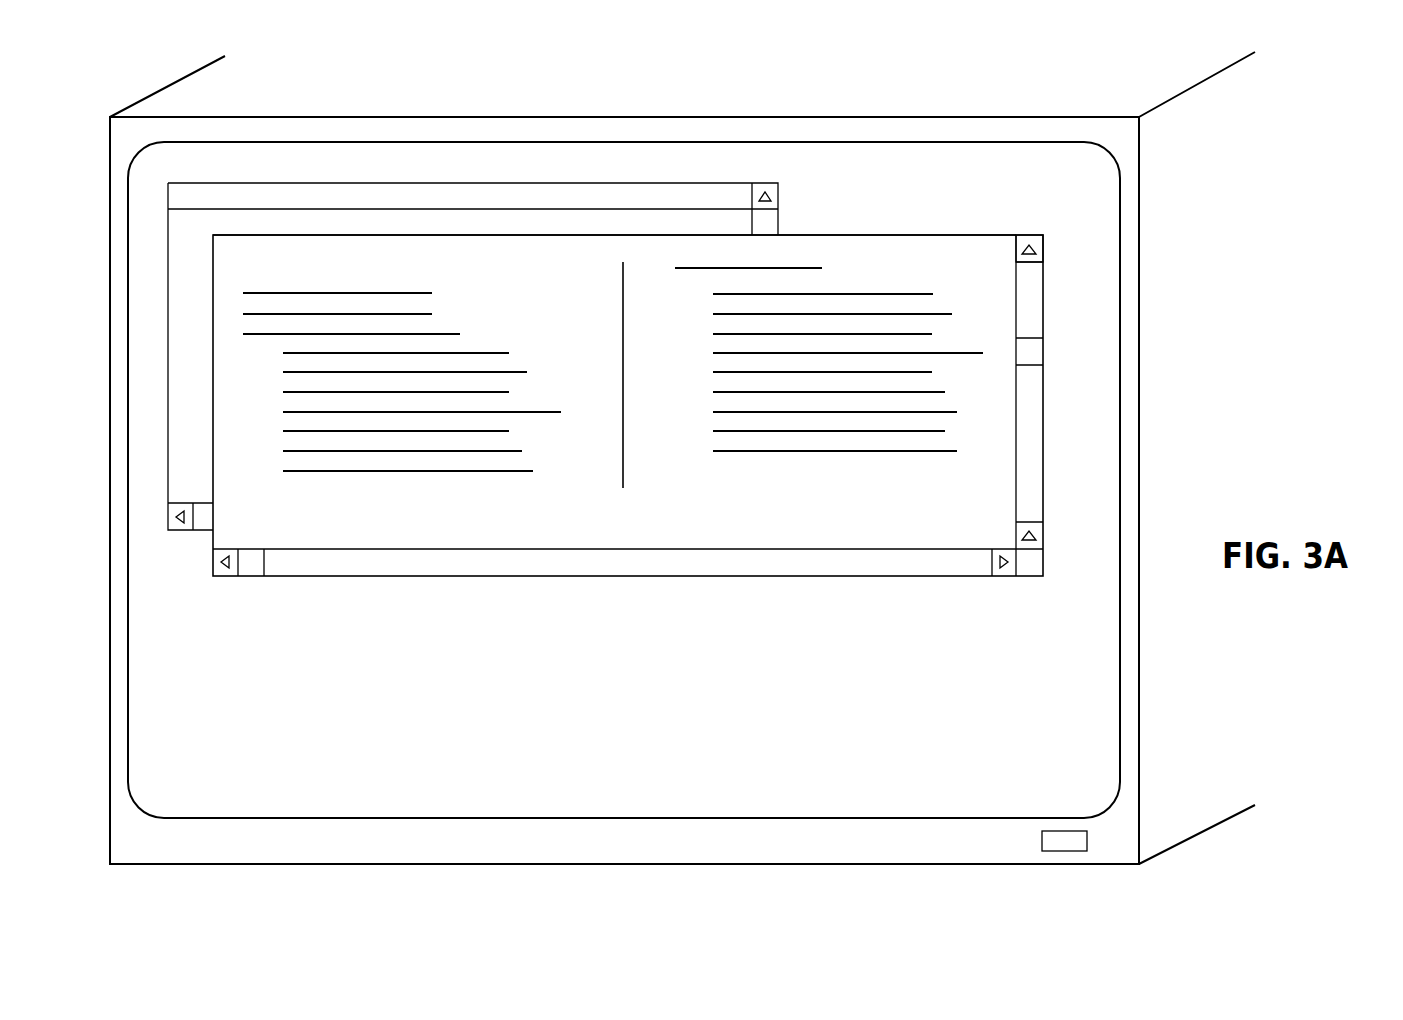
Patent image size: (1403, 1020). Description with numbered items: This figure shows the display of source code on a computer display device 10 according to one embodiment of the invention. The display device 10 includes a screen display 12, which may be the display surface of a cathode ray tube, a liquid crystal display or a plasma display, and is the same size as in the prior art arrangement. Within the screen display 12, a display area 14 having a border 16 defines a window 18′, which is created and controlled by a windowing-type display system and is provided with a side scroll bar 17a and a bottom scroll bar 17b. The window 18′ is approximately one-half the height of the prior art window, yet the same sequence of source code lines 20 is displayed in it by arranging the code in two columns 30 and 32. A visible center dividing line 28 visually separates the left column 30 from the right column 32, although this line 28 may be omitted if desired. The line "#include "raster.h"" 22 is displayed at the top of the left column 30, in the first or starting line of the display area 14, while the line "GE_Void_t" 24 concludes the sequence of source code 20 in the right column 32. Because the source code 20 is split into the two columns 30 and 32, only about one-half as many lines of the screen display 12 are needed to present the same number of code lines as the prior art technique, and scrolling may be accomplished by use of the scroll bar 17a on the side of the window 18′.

The computer display device 10 is at (1138, 268).
The screen display 12 is at (1101, 320).
The display area 14 is at (887, 250).
The border 16 is at (945, 235).
The scroll bar 17a is at (1037, 437).
The scroll bar 17b is at (570, 563).
The window 18′ is at (1046, 228).
The sequence of source code lines 20 is at (236, 377).
The line "#include "raster.h"" 22 is at (450, 267).
The line "GE_Void_t" 24 is at (820, 478).
The center dividing line 28 is at (623, 453).
The column 30 is at (245, 496).
The column 32 is at (635, 496).